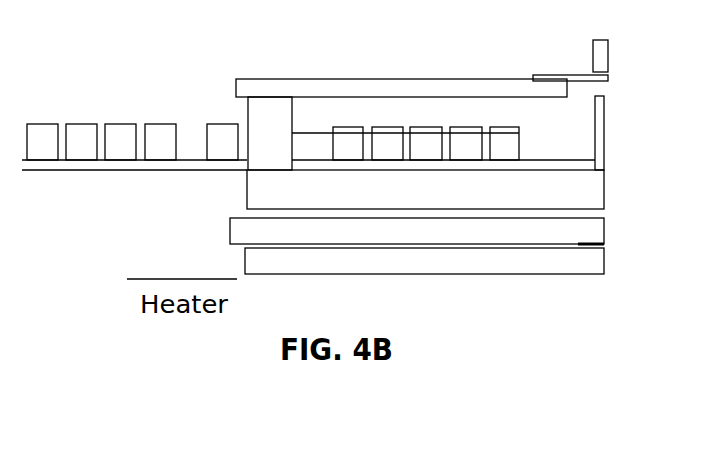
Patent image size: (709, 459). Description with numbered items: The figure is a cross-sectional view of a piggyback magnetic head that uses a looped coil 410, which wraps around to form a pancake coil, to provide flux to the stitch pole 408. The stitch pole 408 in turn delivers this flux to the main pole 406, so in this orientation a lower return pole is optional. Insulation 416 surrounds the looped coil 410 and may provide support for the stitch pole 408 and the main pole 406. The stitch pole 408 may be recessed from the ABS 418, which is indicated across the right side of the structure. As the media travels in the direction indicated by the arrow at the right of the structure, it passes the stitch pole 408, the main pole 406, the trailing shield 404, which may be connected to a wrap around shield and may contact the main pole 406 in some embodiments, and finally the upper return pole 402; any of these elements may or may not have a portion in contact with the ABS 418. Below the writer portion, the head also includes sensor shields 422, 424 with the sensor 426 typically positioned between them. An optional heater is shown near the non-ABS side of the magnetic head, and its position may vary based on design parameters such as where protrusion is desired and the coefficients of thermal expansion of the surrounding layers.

The upper return pole 402 is at (609, 52).
The trailing shield 404 is at (606, 138).
The main pole 406 is at (575, 75).
The stitch pole 408 is at (428, 79).
The looped coil 410 is at (503, 127).
The insulation 416 is at (481, 200).
The ABS 418 is at (616, 189).
The sensor shield 422 is at (230, 233).
The sensor shield 424 is at (245, 257).
The sensor 426 is at (595, 243).